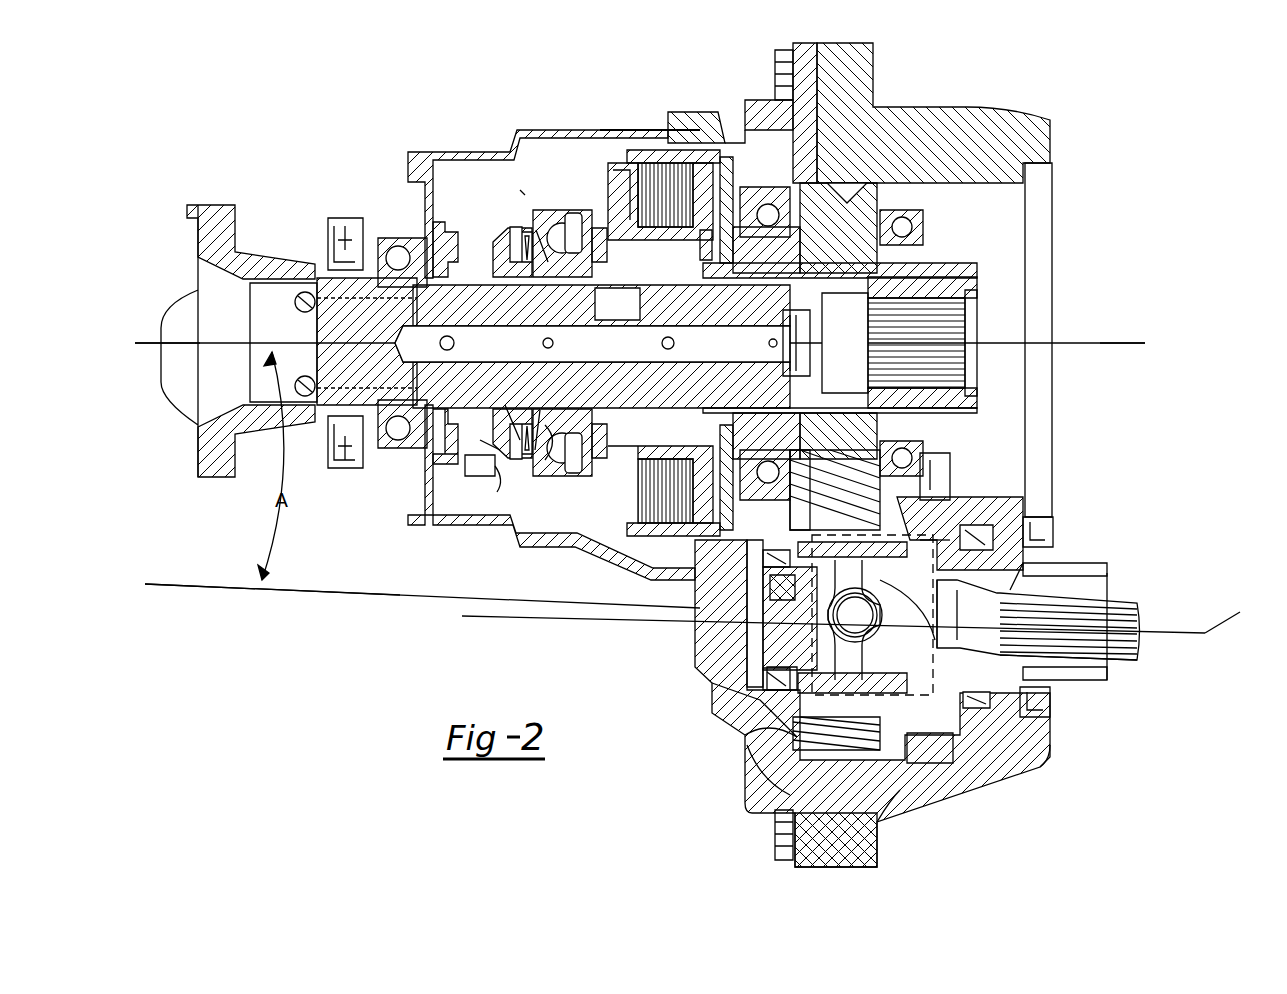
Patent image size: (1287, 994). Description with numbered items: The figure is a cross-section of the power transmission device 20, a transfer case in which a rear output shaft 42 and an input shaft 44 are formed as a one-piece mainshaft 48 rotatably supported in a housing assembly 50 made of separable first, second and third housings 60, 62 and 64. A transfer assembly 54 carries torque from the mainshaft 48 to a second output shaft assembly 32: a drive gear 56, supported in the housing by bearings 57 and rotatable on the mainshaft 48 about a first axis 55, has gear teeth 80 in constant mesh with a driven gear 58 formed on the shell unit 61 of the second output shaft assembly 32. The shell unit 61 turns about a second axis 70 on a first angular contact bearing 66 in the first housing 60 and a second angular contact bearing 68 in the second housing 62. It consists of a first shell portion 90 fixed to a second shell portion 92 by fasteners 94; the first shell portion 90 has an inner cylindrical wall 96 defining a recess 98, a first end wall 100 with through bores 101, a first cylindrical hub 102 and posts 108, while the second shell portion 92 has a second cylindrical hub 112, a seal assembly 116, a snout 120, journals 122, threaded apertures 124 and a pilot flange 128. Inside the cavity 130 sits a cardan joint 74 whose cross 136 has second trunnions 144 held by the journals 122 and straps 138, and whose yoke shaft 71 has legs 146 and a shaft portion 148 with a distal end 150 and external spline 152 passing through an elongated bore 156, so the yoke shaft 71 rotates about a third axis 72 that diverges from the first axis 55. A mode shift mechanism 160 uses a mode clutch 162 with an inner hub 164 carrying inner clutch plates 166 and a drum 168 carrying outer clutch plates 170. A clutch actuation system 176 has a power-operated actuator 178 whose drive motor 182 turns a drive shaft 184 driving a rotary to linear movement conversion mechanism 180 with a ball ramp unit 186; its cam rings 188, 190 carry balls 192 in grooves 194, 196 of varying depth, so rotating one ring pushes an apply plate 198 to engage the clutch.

The power transmission device 20 is at (345, 88).
The second output shaft assembly 32 is at (1130, 510).
The rear output shaft 42 is at (322, 297).
The input shaft 44 is at (967, 278).
The mainshaft 48 is at (795, 276).
The housing assembly 50 is at (430, 148).
The transfer assembly 54 is at (790, 118).
The first axis 55 is at (1115, 350).
The drive gear 56 is at (857, 277).
The bearings 57 is at (768, 215).
The driven gear 58 is at (800, 805).
The first housing 60 is at (893, 120).
The shell unit 61 is at (940, 775).
The second housing 62 is at (693, 112).
The third housing 64 is at (565, 133).
The first angular contact bearing 66 is at (985, 545).
The second angular contact bearing 68 is at (745, 578).
The second axis 70 is at (630, 622).
The yoke shaft 71 is at (1085, 672).
The third axis 72 is at (1233, 620).
The cardan joint 74 is at (925, 540).
The gear teeth 80 is at (815, 197).
The first shell portion 90 is at (843, 765).
The second shell portion 92 is at (1030, 540).
The fasteners 94 is at (785, 590).
The inner cylindrical wall 96 is at (840, 500).
The recess 98 is at (745, 600).
The first end wall 100 is at (747, 778).
The through bores 101 is at (815, 597).
The first cylindrical hub 102 is at (767, 672).
The posts 108 is at (920, 565).
The second cylindrical hub 112 is at (1045, 735).
The seal assembly 116 is at (1050, 697).
The snout 120 is at (1090, 580).
The journals 122 is at (920, 628).
The threaded apertures 124 is at (822, 668).
The pilot flange 128 is at (940, 465).
The cavity 130 is at (900, 790).
The cross 136 is at (920, 725).
The straps 138 is at (745, 628).
The second trunnions 144 is at (875, 605).
The legs 146 is at (820, 470).
The shaft portion 148 is at (1130, 645).
The distal end 150 is at (1055, 595).
The external spline 152 is at (1120, 610).
The elongated bore 156 is at (1100, 575).
The mode shift mechanism 160 is at (640, 168).
The mode clutch 162 is at (672, 160).
The inner hub 164 is at (590, 290).
The inner clutch plates 166 is at (688, 225).
The drum 168 is at (716, 150).
The outer clutch plates 170 is at (630, 180).
The clutch actuation system 176 is at (420, 505).
The power-operated actuator 178 is at (487, 470).
The rotary to linear movement conversion mechanism 180 is at (520, 190).
The drive motor 182 is at (485, 455).
The drive shaft 184 is at (497, 492).
The ball ramp unit 186 is at (546, 213).
The cam ring 188 is at (580, 215).
The cam ring 190 is at (533, 224).
The balls 192 is at (548, 212).
The grooves 194 is at (560, 430).
The grooves 196 is at (528, 405).
The apply plate 198 is at (620, 275).